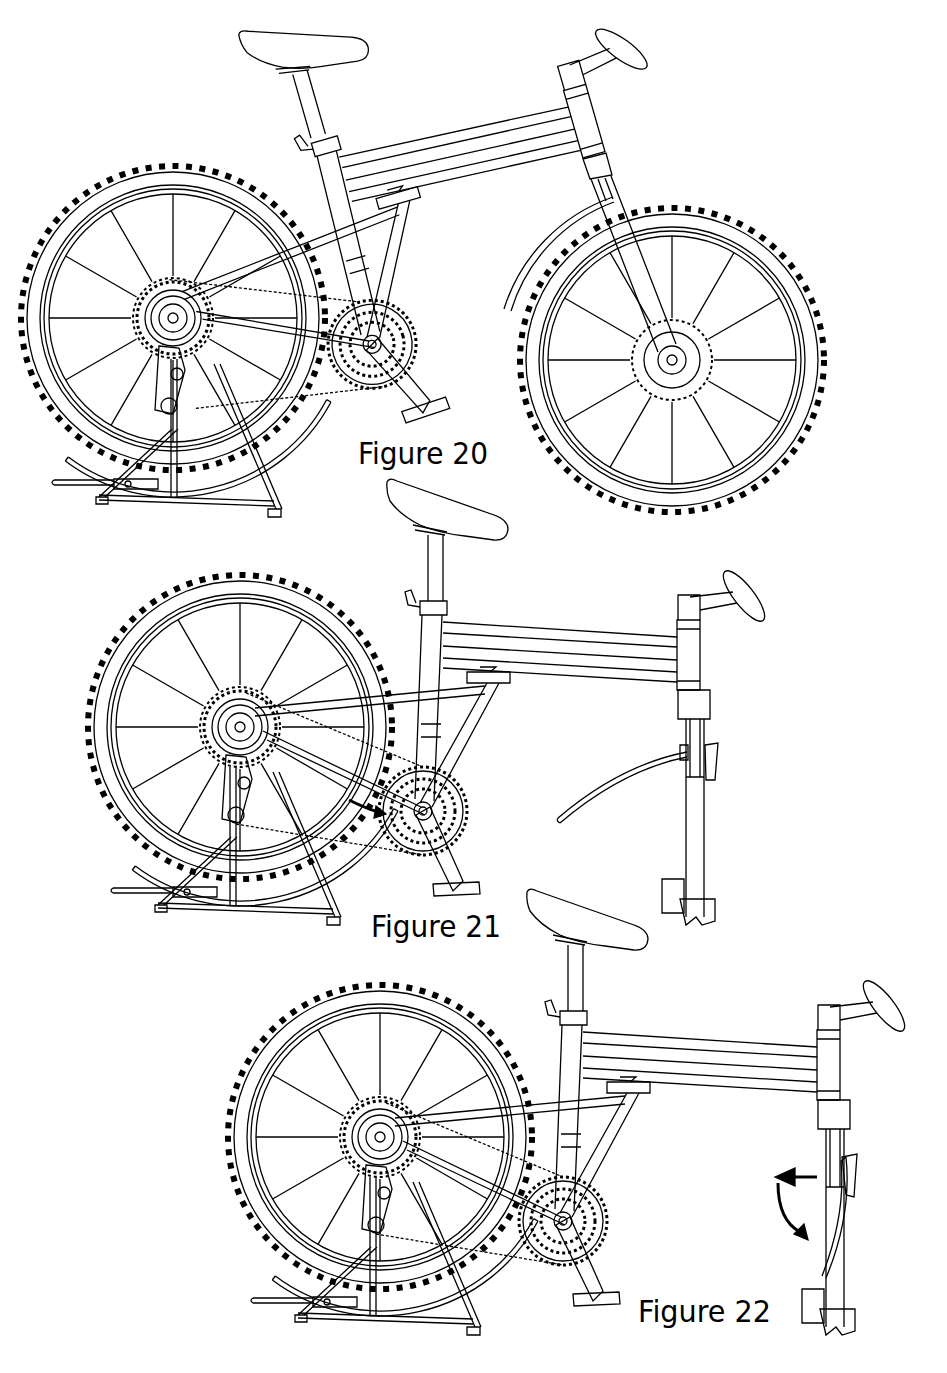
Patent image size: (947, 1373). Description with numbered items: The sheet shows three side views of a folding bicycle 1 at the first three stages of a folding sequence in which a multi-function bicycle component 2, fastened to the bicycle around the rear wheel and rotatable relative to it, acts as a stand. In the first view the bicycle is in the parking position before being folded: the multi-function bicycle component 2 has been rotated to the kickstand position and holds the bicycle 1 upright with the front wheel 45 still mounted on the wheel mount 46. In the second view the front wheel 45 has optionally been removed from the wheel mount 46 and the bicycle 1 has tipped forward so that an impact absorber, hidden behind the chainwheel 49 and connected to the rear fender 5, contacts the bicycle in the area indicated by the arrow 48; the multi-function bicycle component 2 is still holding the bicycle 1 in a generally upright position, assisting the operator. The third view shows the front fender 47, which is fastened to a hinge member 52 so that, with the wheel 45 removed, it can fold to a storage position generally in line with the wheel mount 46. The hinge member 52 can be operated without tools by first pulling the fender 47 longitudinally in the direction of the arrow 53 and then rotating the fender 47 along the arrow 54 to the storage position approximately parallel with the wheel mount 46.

In FIG. 20, the folding bicycle 1 is at (451, 256).
In FIG. 20, the multi-function bicycle component 2 is at (148, 512).
In FIG. 21, the fender 5 is at (243, 742).
In FIG. 20, the front wheel 45 is at (780, 233).
In FIG. 21, the wheel mount 46 is at (716, 807).
In FIG. 22, the wheel mount 46 is at (849, 1217).
In FIG. 21, the front fender 47 is at (617, 787).
In FIG. 22, the front fender 47 is at (777, 1216).
In FIG. 21, the arrow 48 is at (426, 837).
In FIG. 21, the chainwheel 49 is at (457, 811).
In FIG. 21, the hinge member 52 is at (661, 748).
In FIG. 22, the arrow 53 is at (756, 1158).
In FIG. 22, the arrow 54 is at (750, 1211).